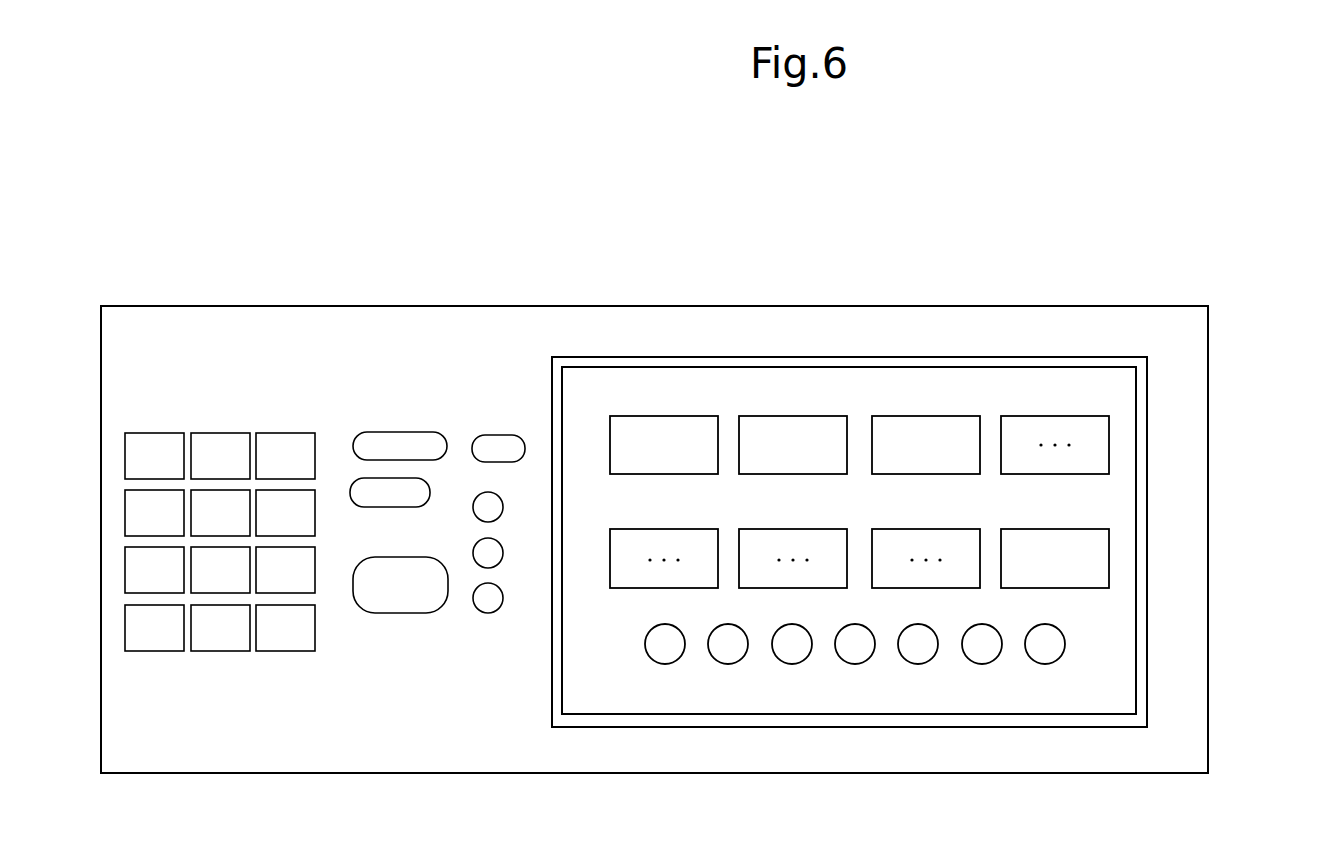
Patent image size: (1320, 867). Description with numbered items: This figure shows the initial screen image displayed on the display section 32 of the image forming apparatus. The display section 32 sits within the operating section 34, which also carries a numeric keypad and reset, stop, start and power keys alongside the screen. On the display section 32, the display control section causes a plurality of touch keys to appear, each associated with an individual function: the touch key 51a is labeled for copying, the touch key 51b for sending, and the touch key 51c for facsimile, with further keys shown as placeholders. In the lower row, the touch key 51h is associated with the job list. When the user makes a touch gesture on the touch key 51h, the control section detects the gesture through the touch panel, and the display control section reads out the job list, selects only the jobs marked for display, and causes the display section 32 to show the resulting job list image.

The operating section 34 is at (1162, 308).
The display section 32 is at (1008, 355).
The touch key 51a is at (662, 415).
The touch key 51b is at (790, 415).
The touch key 51c is at (922, 415).
The touch key associated with the job list 51h is at (1109, 559).